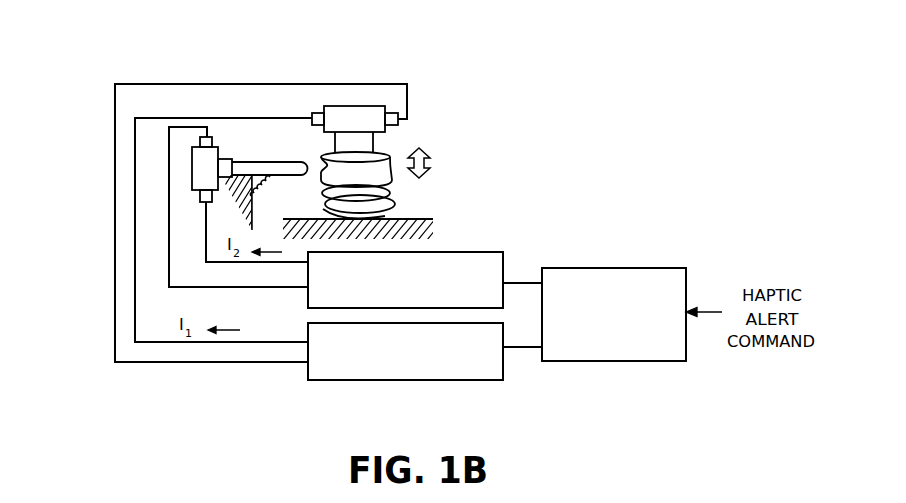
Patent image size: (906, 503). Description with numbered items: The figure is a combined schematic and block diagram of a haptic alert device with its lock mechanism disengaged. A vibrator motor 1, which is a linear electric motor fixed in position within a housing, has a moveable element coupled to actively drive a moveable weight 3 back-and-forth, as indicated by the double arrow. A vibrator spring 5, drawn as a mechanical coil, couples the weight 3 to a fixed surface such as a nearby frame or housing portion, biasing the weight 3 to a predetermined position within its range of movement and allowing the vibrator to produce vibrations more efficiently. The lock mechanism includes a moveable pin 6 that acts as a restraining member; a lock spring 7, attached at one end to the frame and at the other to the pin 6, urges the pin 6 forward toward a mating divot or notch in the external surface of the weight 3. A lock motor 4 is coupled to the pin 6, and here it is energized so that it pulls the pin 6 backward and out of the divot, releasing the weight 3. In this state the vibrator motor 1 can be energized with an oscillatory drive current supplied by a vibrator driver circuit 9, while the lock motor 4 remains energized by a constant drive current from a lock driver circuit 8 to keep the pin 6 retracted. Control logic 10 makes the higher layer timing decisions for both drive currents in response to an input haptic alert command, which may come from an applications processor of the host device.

The vibrator motor 1 is at (380, 104).
The weight 3 is at (392, 158).
The lock motor 4 is at (192, 148).
The vibrator spring 5 is at (400, 205).
The pin 6 is at (298, 162).
The lock spring 7 is at (270, 188).
The lock driver circuit 8 is at (503, 255).
The vibrator driver circuit 9 is at (493, 380).
The control logic 10 is at (645, 361).